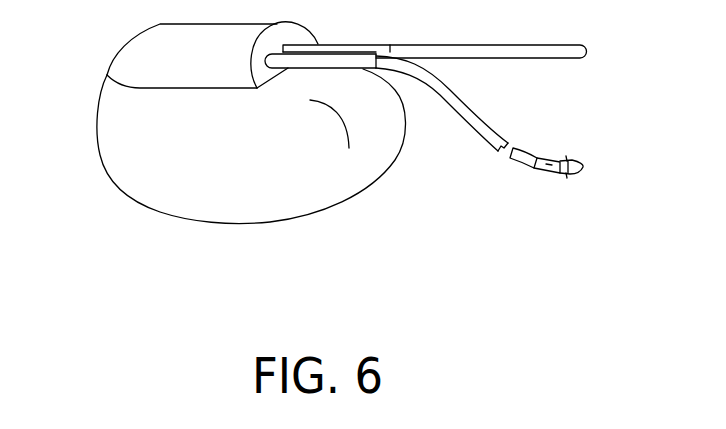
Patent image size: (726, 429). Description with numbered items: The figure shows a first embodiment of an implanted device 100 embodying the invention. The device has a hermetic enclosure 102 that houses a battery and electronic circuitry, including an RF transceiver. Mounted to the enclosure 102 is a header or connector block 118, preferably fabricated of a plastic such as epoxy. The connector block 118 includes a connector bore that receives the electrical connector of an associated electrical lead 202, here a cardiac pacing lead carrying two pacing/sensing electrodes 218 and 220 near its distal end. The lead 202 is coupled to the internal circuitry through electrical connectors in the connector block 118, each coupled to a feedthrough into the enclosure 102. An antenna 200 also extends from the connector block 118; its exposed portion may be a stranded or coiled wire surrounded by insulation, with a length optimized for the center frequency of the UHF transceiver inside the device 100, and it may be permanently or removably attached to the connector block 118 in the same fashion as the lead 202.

The implanted device 100 is at (140, 246).
The hermetic enclosure 102 is at (108, 170).
The connector block 118 is at (142, 33).
The antenna 200 is at (543, 44).
The electrical lead 202 is at (458, 100).
The pacing/sensing electrode 218 is at (583, 167).
The pacing/sensing electrode 220 is at (548, 157).